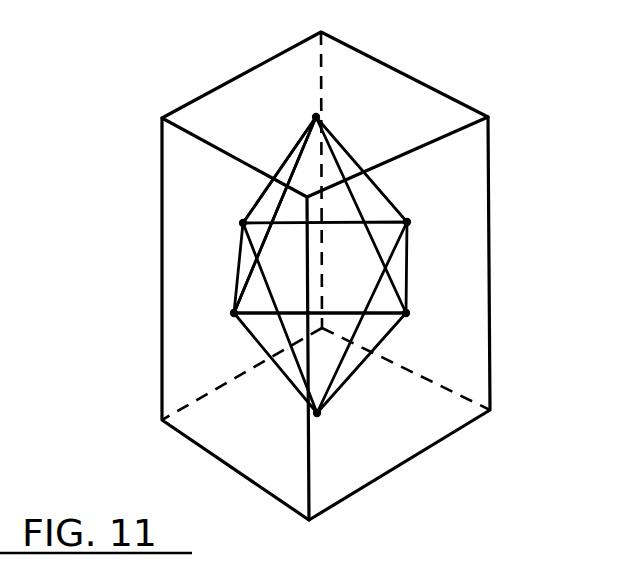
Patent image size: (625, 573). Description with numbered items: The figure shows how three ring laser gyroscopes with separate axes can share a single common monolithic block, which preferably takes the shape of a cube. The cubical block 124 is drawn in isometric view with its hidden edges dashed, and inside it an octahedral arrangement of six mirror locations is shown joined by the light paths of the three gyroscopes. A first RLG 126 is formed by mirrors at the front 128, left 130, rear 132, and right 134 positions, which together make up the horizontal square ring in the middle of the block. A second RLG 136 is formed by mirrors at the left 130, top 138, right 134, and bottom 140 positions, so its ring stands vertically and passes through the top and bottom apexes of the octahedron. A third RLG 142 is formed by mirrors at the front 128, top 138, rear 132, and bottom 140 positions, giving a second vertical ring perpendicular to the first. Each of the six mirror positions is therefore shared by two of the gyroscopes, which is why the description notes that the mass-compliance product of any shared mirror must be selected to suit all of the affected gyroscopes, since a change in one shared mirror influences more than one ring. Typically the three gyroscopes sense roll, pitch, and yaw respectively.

The cubical block 124 is at (480, 104).
The first RLG 126 is at (262, 313).
The front face mirror 128 is at (234, 312).
The left face mirror 130 is at (243, 222).
The rear face mirror 132 is at (408, 221).
The right face mirror 134 is at (407, 314).
The second RLG 136 is at (257, 198).
The top mirror 138 is at (319, 116).
The bottom mirror 140 is at (319, 413).
The third RLG 142 is at (249, 275).